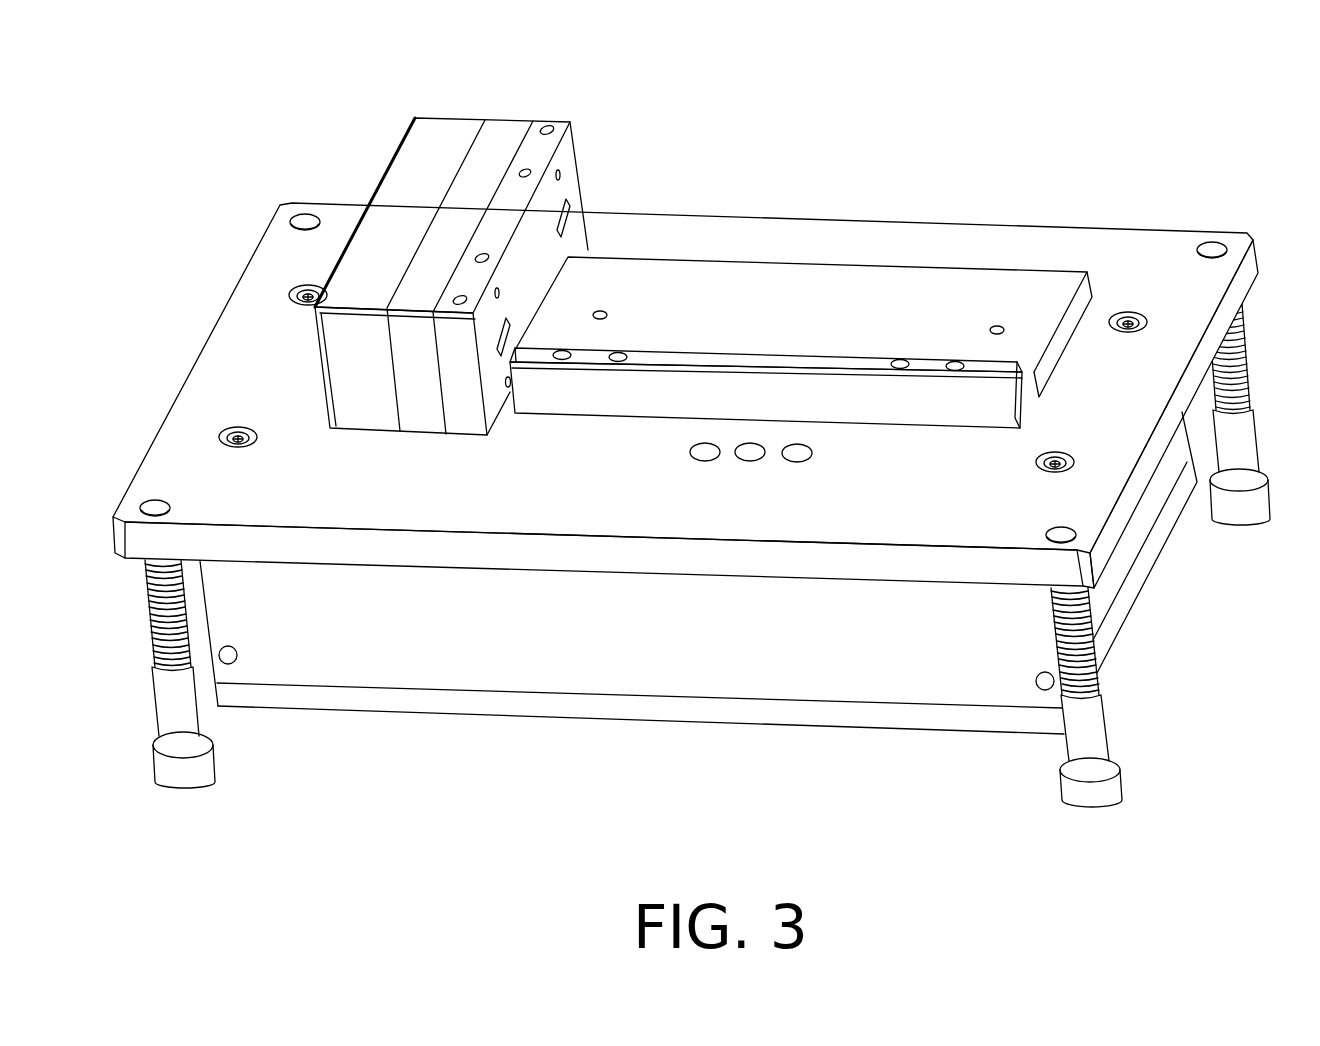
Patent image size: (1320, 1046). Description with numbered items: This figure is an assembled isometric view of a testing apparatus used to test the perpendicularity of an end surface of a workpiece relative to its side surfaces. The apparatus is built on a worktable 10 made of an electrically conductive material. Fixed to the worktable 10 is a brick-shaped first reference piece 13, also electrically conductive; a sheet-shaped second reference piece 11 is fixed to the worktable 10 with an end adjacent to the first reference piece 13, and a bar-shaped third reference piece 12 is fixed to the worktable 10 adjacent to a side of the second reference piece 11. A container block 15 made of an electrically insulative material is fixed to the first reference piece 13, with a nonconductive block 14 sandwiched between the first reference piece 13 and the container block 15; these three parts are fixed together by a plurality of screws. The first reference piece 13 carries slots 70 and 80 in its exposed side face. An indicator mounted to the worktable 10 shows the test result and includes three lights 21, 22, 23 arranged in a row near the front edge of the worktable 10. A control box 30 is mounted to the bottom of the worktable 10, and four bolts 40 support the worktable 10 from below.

The worktable 10 is at (1140, 265).
The second reference piece 11 is at (788, 298).
The third reference piece 12 is at (902, 397).
The first reference piece 13 is at (535, 127).
The nonconductive block 14 is at (505, 137).
The container block 15 is at (443, 147).
The first slot 70 is at (563, 220).
The second slot 80 is at (507, 337).
The light 21 is at (708, 452).
The light 22 is at (750, 452).
The light 23 is at (797, 453).
The control box 30 is at (505, 637).
The bolt 40 is at (1087, 727).